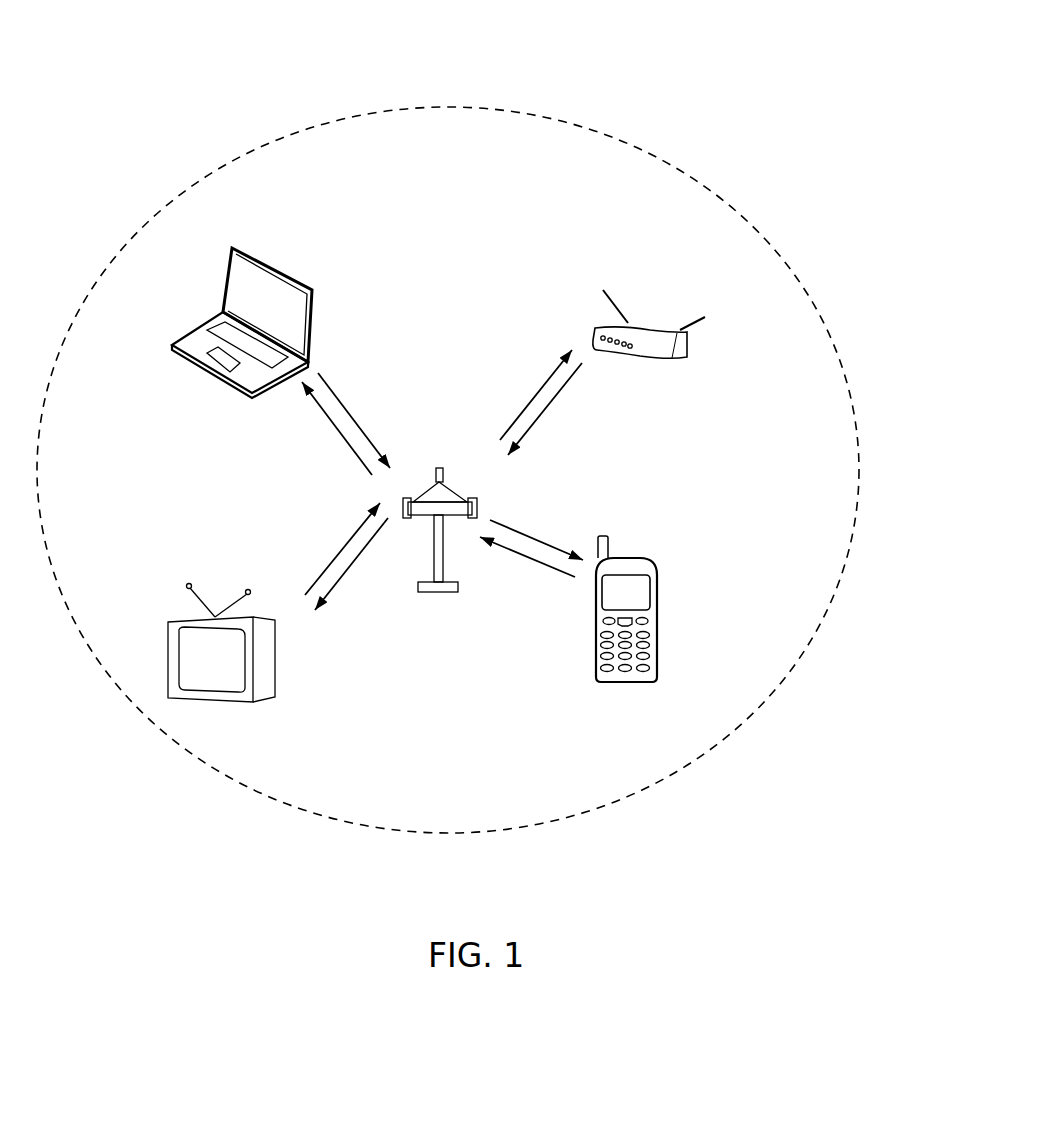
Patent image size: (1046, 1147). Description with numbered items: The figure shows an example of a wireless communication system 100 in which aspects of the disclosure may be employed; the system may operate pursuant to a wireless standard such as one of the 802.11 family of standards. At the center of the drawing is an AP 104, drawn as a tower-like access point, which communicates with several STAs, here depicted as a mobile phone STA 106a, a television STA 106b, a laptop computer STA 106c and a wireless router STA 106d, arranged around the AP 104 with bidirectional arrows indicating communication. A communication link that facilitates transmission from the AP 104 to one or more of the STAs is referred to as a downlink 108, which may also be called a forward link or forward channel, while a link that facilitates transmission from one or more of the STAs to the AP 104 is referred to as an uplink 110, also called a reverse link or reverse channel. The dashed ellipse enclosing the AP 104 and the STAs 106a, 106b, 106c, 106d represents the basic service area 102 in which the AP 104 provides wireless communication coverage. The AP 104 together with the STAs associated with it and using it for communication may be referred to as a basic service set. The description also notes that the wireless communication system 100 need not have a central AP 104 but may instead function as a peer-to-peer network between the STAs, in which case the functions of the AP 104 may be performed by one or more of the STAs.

The wireless communication system 100 is at (712, 87).
The basic service area 102 is at (795, 277).
The AP 104 is at (439, 468).
The STA 106a is at (632, 557).
The STA 106b is at (267, 618).
The STA 106c is at (241, 248).
The STA 106d is at (660, 330).
The downlink 108 is at (523, 525).
The uplink 110 is at (480, 558).